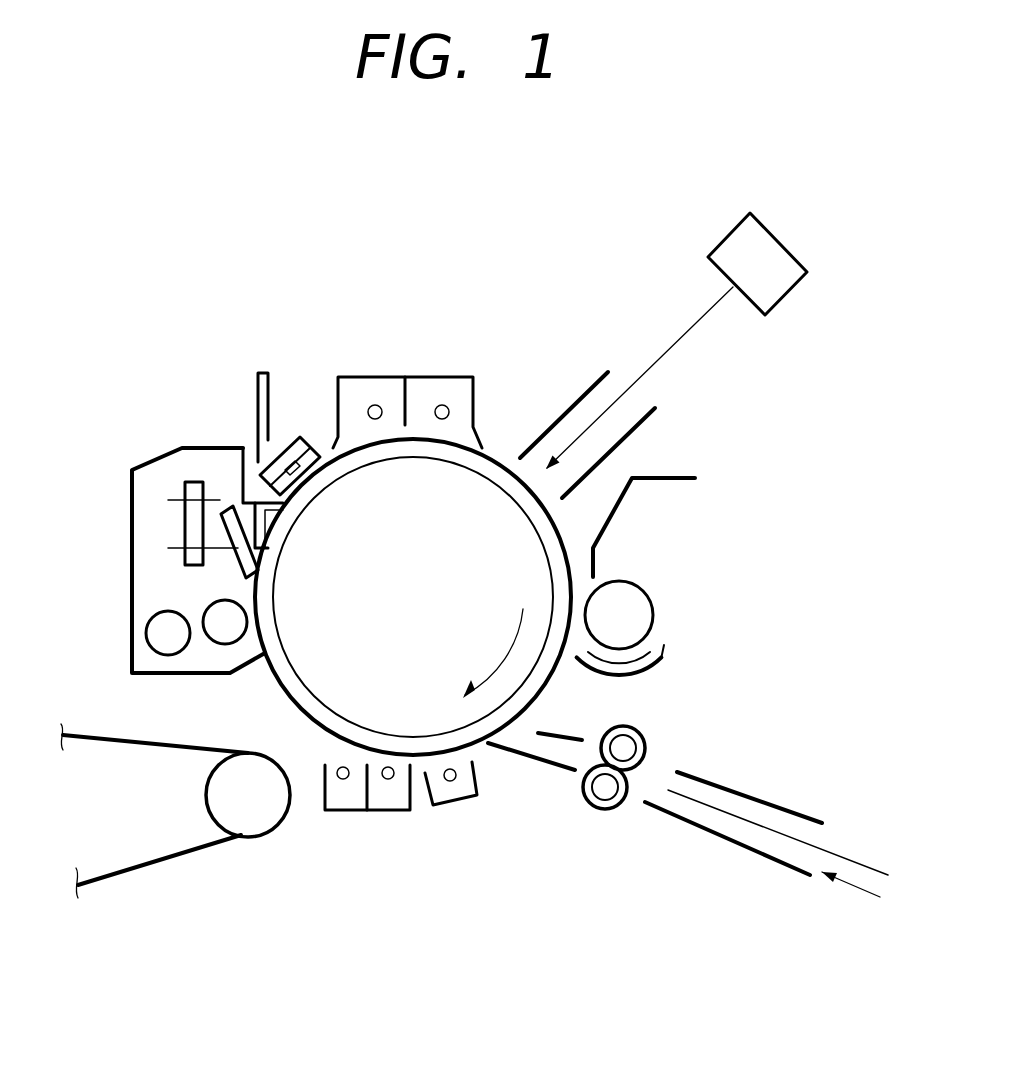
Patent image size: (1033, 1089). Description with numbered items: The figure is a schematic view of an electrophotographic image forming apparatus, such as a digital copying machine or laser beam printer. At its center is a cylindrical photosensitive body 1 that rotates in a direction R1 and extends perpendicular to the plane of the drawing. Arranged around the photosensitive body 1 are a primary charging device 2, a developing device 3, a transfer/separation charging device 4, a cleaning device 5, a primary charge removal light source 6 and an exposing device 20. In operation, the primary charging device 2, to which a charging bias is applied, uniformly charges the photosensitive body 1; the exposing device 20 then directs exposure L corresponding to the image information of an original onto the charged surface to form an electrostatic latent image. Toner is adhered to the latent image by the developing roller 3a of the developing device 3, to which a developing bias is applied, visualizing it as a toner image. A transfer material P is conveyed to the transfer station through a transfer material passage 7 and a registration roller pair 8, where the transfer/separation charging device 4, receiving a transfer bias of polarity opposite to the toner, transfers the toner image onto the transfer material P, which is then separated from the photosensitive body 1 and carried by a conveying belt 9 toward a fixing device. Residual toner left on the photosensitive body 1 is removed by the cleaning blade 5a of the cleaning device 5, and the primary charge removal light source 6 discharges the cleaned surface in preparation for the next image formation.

The photosensitive body 1 is at (493, 450).
The primary charging device 2 is at (435, 378).
The developing device 3 is at (678, 475).
The developing roller 3a is at (640, 584).
The transfer/separation charging device 4 is at (423, 820).
The cleaning device 5 is at (130, 647).
The cleaning blade 5a is at (250, 567).
The primary charge removal light source 6 is at (295, 437).
The transfer material passage 7 is at (797, 812).
The registration roller pair 8 is at (645, 737).
The conveying belt 9 is at (145, 867).
The exposing device 20 is at (732, 228).
The exposure L is at (687, 335).
The transfer material P is at (863, 863).
The rotation direction R1 is at (487, 653).